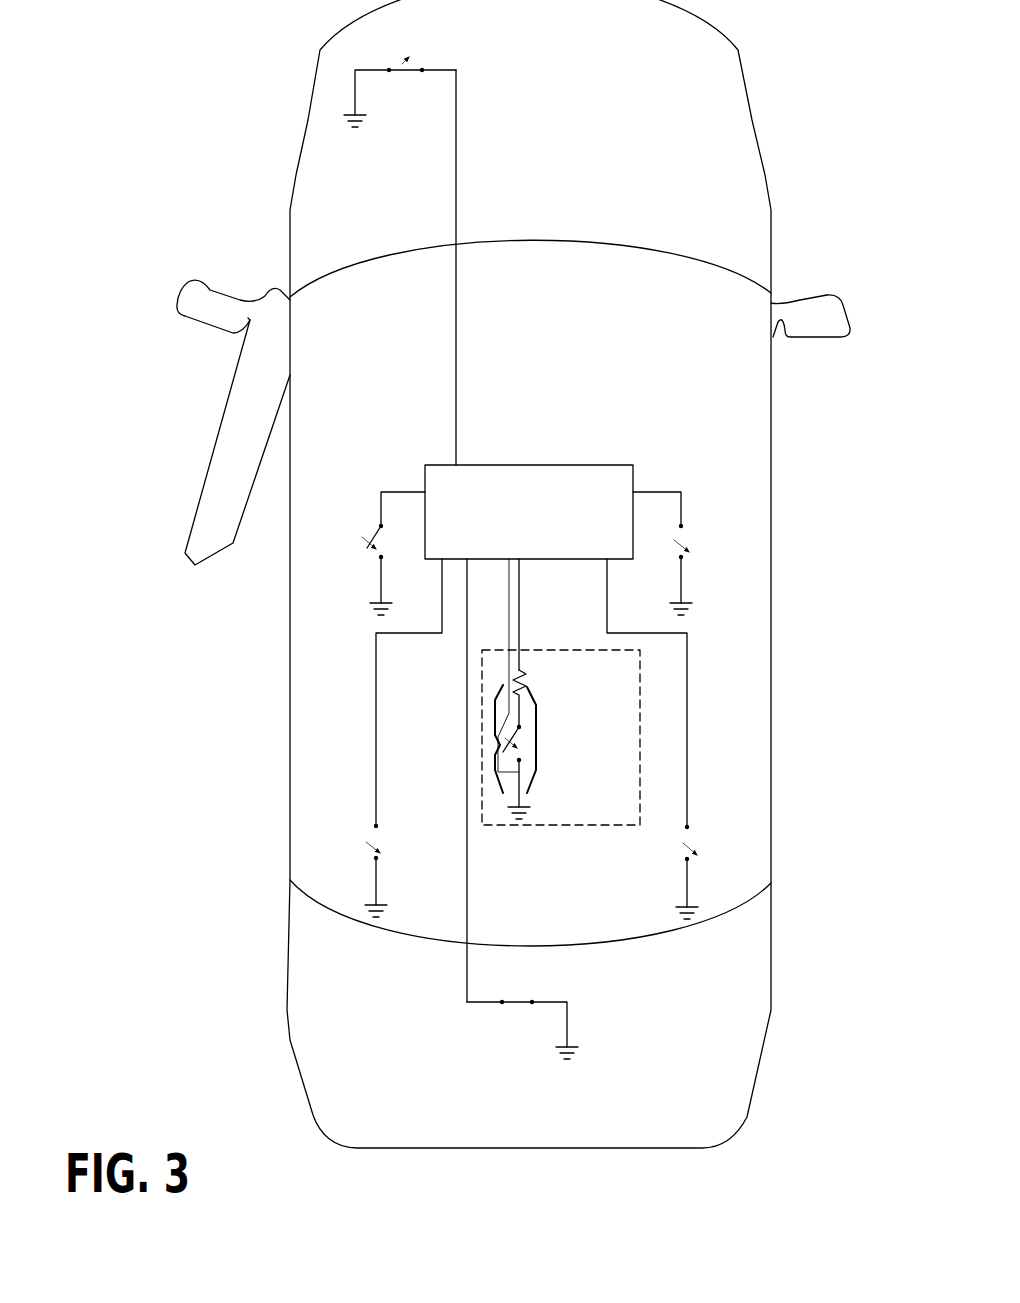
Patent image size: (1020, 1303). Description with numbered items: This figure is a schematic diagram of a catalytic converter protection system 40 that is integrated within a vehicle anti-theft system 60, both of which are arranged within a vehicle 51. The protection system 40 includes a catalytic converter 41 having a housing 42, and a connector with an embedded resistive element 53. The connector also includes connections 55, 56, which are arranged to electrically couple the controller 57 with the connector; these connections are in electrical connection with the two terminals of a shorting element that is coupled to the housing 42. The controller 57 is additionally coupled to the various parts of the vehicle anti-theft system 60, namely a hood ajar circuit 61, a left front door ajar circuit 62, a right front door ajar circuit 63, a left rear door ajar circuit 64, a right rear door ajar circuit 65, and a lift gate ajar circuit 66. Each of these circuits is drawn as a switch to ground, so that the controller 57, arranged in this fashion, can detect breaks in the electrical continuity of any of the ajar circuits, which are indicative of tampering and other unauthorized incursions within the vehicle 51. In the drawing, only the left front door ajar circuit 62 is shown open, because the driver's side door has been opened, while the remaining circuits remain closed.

The catalytic converter protection system 40 is at (675, 708).
The catalytic converter 41 is at (540, 713).
The housing 42 is at (527, 789).
The vehicle 51 is at (757, 136).
The resistive element 53 is at (523, 672).
The connection 55 is at (510, 628).
The connection 56 is at (521, 628).
The controller 57 is at (543, 529).
The vehicle anti-theft system 60 is at (533, 621).
The hood ajar circuit 61 is at (390, 68).
The left front door ajar circuit 62 is at (365, 560).
The right front door ajar circuit 63 is at (681, 526).
The left rear door ajar circuit 64 is at (376, 830).
The right rear door ajar circuit 65 is at (688, 838).
The lift gate ajar circuit 66 is at (502, 1002).